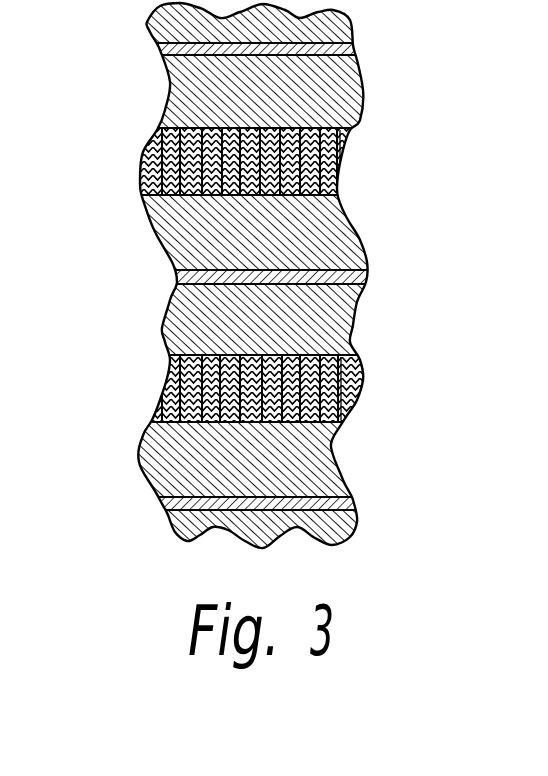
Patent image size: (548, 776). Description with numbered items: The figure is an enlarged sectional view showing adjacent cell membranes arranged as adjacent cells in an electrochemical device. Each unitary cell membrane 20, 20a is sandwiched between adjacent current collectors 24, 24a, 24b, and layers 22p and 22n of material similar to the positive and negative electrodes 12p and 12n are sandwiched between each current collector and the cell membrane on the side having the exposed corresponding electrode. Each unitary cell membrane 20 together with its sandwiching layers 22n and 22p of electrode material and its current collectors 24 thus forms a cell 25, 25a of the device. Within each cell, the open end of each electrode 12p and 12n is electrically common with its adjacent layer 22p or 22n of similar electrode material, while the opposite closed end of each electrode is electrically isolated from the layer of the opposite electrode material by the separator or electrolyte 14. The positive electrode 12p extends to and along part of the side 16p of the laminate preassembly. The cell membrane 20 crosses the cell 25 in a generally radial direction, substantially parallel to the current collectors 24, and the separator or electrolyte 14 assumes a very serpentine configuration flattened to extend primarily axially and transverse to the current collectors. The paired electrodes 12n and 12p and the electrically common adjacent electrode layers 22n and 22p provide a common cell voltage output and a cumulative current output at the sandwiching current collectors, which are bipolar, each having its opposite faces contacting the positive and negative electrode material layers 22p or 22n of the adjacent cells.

The unitary cell membrane 20 is at (120, 178).
The unitary cell membrane 20a is at (120, 412).
The current collector 24 is at (150, 44).
The current collector 24a is at (160, 276).
The current collector 24b is at (173, 502).
The negative electrode material layer 22n is at (190, 83).
The positive electrode material layer 22p is at (175, 220).
The separator or electrolyte 14 is at (152, 155).
The negative electrode 12n is at (316, 128).
The positive electrode 12p is at (333, 175).
The side of laminate cell preassembly 16p is at (337, 190).
The cell 25 is at (367, 147).
The cell 25a is at (358, 427).